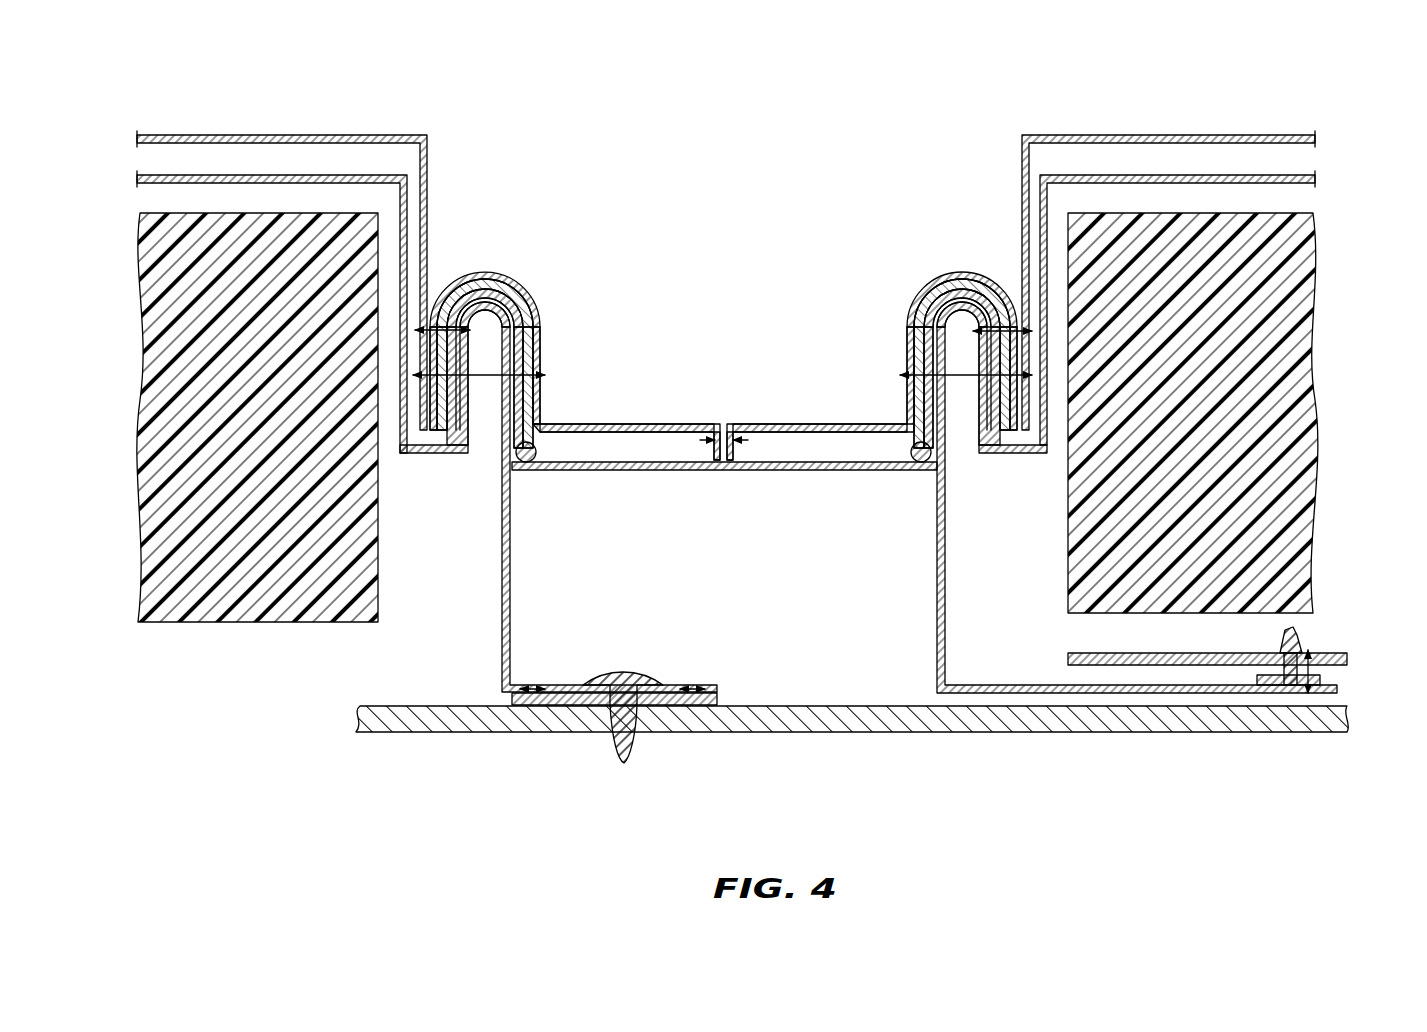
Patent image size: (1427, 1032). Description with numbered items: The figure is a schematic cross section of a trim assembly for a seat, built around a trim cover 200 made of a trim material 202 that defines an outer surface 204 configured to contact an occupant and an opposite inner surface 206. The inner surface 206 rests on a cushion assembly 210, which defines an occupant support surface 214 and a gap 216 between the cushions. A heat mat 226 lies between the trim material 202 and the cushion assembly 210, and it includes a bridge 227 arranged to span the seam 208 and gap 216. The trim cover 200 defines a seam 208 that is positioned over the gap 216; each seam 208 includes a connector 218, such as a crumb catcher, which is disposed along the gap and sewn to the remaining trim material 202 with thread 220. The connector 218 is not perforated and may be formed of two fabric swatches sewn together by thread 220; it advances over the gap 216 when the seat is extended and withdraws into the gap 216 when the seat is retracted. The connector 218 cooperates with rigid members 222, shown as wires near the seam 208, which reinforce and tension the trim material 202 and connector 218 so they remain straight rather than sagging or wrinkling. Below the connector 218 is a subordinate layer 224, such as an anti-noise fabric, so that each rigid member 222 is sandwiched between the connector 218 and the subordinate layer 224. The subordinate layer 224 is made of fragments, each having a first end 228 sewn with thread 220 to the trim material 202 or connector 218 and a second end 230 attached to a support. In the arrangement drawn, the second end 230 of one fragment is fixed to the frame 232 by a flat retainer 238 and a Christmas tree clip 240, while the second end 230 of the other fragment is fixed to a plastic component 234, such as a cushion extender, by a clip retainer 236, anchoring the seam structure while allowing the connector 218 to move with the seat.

The trim cover 200 is at (123, 247).
The trim material 202 is at (367, 133).
The outer surface 204 is at (165, 132).
The inner surface 206 is at (1300, 147).
The seam 208 is at (625, 240).
The cushion assembly 210 is at (142, 408).
The occupant support surface 214 is at (270, 210).
The gap 216 is at (800, 370).
The connector 218 is at (928, 288).
The thread 220 is at (418, 328).
The rigid member 222 is at (533, 465).
The subordinate layer 224 is at (508, 570).
The heat mat 226 is at (1220, 175).
The bridge 227 is at (843, 468).
The first end 228 is at (497, 290).
The second end 230 is at (718, 688).
The frame 232 is at (397, 733).
The plastic component 234 is at (1333, 653).
The clip retainer 236 is at (1287, 687).
The flat retainer 238 is at (717, 708).
The Christmas tree clip 240 is at (627, 673).